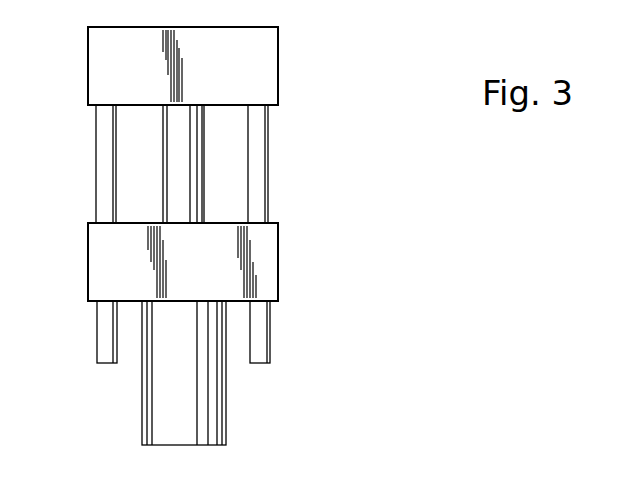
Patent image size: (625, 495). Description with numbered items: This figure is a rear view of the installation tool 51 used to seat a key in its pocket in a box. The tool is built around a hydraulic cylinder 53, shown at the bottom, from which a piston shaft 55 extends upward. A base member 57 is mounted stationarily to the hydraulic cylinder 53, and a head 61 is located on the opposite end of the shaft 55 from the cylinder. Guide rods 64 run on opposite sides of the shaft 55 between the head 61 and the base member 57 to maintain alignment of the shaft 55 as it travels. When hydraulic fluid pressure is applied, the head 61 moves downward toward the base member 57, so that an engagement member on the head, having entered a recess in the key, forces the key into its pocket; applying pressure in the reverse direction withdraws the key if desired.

The installation tool 51 is at (290, 45).
The head 61 is at (88, 72).
The guide rods 64 is at (96, 168).
The piston shaft 55 is at (204, 147).
The base member 57 is at (278, 254).
The hydraulic cylinder 53 is at (226, 410).